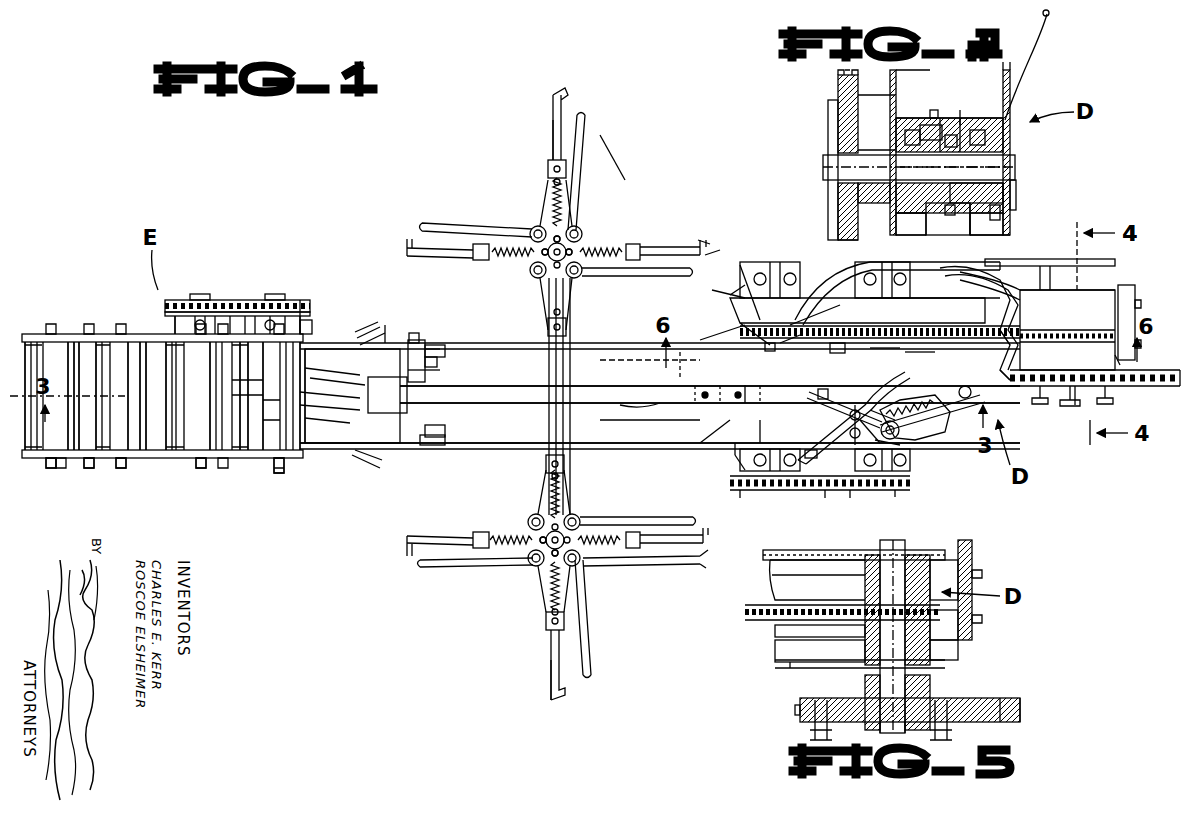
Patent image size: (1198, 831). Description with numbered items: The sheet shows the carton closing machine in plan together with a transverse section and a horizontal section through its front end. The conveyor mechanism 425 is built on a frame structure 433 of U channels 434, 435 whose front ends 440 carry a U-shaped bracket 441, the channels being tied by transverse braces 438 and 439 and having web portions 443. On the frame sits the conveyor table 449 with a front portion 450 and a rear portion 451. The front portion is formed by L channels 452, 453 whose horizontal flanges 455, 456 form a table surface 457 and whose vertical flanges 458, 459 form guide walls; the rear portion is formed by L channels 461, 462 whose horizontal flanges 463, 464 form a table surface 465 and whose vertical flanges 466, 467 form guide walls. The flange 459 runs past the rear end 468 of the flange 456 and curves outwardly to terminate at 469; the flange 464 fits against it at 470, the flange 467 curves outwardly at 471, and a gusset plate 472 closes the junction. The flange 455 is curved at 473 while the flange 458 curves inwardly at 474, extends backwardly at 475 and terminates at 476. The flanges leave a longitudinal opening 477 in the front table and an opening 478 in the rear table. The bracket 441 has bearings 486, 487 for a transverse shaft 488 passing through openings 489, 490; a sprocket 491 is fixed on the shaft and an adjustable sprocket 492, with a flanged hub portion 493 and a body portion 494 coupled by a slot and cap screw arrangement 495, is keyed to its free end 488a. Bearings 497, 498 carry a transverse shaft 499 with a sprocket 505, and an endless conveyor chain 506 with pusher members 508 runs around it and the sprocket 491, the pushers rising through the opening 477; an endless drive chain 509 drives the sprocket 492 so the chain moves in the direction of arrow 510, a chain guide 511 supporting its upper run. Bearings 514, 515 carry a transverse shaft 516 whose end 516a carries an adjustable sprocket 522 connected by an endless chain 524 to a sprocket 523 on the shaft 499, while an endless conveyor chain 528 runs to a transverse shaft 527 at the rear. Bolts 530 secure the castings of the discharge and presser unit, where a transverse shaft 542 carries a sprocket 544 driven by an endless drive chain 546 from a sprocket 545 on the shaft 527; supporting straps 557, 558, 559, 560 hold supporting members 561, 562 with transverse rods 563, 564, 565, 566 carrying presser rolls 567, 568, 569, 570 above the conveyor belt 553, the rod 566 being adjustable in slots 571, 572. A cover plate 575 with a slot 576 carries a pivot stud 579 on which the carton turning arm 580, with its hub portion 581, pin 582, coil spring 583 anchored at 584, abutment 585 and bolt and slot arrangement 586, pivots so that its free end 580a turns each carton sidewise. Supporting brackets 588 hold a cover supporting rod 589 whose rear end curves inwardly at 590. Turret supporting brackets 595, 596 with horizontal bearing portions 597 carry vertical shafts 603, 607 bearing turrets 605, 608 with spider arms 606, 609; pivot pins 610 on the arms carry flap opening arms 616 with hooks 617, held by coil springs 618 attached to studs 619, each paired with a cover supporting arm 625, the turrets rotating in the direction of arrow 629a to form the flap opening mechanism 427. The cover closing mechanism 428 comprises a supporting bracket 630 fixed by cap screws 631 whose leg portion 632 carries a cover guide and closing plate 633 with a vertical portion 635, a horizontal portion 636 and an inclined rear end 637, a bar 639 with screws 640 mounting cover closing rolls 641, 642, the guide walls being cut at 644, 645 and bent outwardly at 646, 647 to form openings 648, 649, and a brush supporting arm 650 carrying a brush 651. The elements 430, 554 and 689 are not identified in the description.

In FIG. 1, the bar 425 is at (1080, 305).
In FIG. 5, the bar 425 is at (808, 605).
In FIG. 1, the spring mechanism 427 is at (515, 300).
In FIG. 1, the frame beam 428 is at (430, 447).
In FIG. 1, the roller 430 is at (120, 460).
In FIG. 1, the housing wall 433 is at (1028, 292).
In FIG. 4, the housing wall 433 is at (1010, 128).
In FIG. 5, the housing wall 433 is at (805, 552).
In FIG. 1, the plate 434 is at (740, 330).
In FIG. 4, the plate 434 is at (1008, 233).
In FIG. 5, the plate 434 is at (825, 552).
In FIG. 4, the plate 435 is at (908, 232).
In FIG. 5, the plate 435 is at (790, 650).
In FIG. 1, the block 438 is at (840, 352).
In FIG. 4, the block 438 is at (922, 122).
In FIG. 1, the block 439 is at (828, 392).
In FIG. 1, the flange 440 is at (1128, 302).
In FIG. 4, the flange 440 is at (1014, 196).
In FIG. 5, the flange 440 is at (935, 560).
In FIG. 1, the member 441 is at (1135, 368).
In FIG. 4, the member 441 is at (1005, 218).
In FIG. 5, the member 441 is at (945, 655).
In FIG. 4, the plate 443 is at (895, 222).
In FIG. 5, the plate 443 is at (790, 664).
In FIG. 1, the lever 449 is at (720, 455).
In FIG. 1, the wall 450 is at (1003, 370).
In FIG. 4, the wall 450 is at (1003, 74).
In FIG. 1, the frame 451 is at (338, 360).
In FIG. 1, the rack 452 is at (930, 317).
In FIG. 1, the rack 453 is at (985, 364).
In FIG. 1, the housing 455 is at (1029, 311).
In FIG. 1, the housing 456 is at (1053, 362).
In FIG. 4, the bearing 457 is at (915, 130).
In FIG. 1, the rod 458 is at (875, 300).
In FIG. 4, the rod 458 is at (1012, 90).
In FIG. 1, the bolt 459 is at (960, 390).
In FIG. 4, the bolt 459 is at (843, 78).
In FIG. 1, the block 461 is at (440, 348).
In FIG. 1, the rail 462 is at (508, 447).
In FIG. 1, the rail 463 is at (496, 371).
In FIG. 1, the rail 464 is at (494, 433).
In FIG. 1, the spring mechanism 465 is at (548, 520).
In FIG. 1, the bar 466 is at (610, 380).
In FIG. 1, the bar 467 is at (632, 434).
In FIG. 1, the bar 468 is at (935, 352).
In FIG. 1, the bearing block 469 is at (800, 470).
In FIG. 1, the lever 470 is at (830, 428).
In FIG. 1, the post 471 is at (760, 430).
In FIG. 1, the post 472 is at (735, 452).
In FIG. 1, the arm 473 is at (818, 322).
In FIG. 1, the curved arm 474 is at (830, 300).
In FIG. 1, the plate 475 is at (750, 314).
In FIG. 1, the link 476 is at (725, 345).
In FIG. 1, the rack 477 is at (880, 330).
In FIG. 4, the rack 477 is at (962, 120).
In FIG. 1, the post 478 is at (748, 388).
In FIG. 4, the plate 486 is at (978, 203).
In FIG. 5, the plate 486 is at (790, 578).
In FIG. 4, the hub 487 is at (940, 205).
In FIG. 5, the hub 487 is at (780, 632).
In FIG. 1, the shaft 488 is at (1070, 405).
In FIG. 4, the shaft 488 is at (826, 162).
In FIG. 5, the shaft 488 is at (893, 545).
In FIG. 1, the shaft portion 488a is at (1062, 405).
In FIG. 4, the shaft portion 488a is at (826, 172).
In FIG. 5, the shaft portion 488a is at (935, 730).
In FIG. 4, the hub 489 is at (1012, 186).
In FIG. 5, the hub 489 is at (870, 555).
In FIG. 4, the hub 490 is at (840, 194).
In FIG. 5, the hub 490 is at (932, 692).
In FIG. 1, the shaft axis 491 is at (1034, 326).
In FIG. 4, the shaft axis 491 is at (940, 178).
In FIG. 5, the shaft axis 491 is at (940, 640).
In FIG. 1, the base plate 492 is at (1098, 388).
In FIG. 4, the base plate 492 is at (845, 240).
In FIG. 5, the base plate 492 is at (1012, 711).
In FIG. 1, the plate 493 is at (1078, 398).
In FIG. 4, the plate 493 is at (830, 126).
In FIG. 5, the plate 493 is at (878, 722).
In FIG. 4, the flange 494 is at (830, 110).
In FIG. 5, the flange 494 is at (800, 710).
In FIG. 1, the bolt 495 is at (1112, 405).
In FIG. 5, the bolt 495 is at (815, 737).
In FIG. 1, the link 497 is at (760, 320).
In FIG. 1, the post 498 is at (745, 462).
In FIG. 1, the bearing block 499 is at (795, 265).
In FIG. 1, the link 505 is at (745, 300).
In FIG. 1, the rack 506 is at (790, 340).
In FIG. 1, the screw 508 is at (768, 348).
In FIG. 4, the screw 508 is at (935, 112).
In FIG. 1, the plate end 509 is at (1180, 390).
In FIG. 1, the bar 510 is at (870, 350).
In FIG. 4, the key 511 is at (950, 138).
In FIG. 1, the bearing block 514 is at (796, 278).
In FIG. 1, the bearing block 515 is at (912, 462).
In FIG. 1, the bolt 516 is at (900, 494).
In FIG. 1, the bolt 516a is at (850, 492).
In FIG. 1, the rack 522 is at (912, 481).
In FIG. 1, the bolt 523 is at (760, 490).
In FIG. 1, the bolt 524 is at (826, 490).
In FIG. 1, the bracket 527 is at (275, 294).
In FIG. 1, the hole 528 is at (700, 386).
In FIG. 1, the plate 530 is at (300, 330).
In FIG. 1, the bracket 542 is at (200, 294).
In FIG. 1, the post 544 is at (180, 322).
In FIG. 1, the block 545 is at (312, 322).
In FIG. 1, the rack 546 is at (240, 300).
In FIG. 1, the roller 553 is at (88, 358).
In FIG. 1, the roller 554 is at (156, 460).
In FIG. 1, the post 557 is at (300, 300).
In FIG. 1, the roller 558 is at (100, 334).
In FIG. 1, the roller 559 is at (265, 462).
In FIG. 1, the bolt 560 is at (76, 466).
In FIG. 1, the roller 561 is at (68, 334).
In FIG. 1, the roller 562 is at (140, 462).
In FIG. 1, the roller 563 is at (293, 456).
In FIG. 1, the bolt 564 is at (200, 468).
In FIG. 1, the bolt 565 is at (128, 470).
In FIG. 1, the bolt 566 is at (52, 466).
In FIG. 1, the roller 567 is at (290, 424).
In FIG. 1, the roller 568 is at (240, 436).
In FIG. 1, the roller 569 is at (135, 382).
In FIG. 1, the roller 570 is at (74, 366).
In FIG. 1, the roller 571 is at (40, 334).
In FIG. 1, the bolt 572 is at (40, 464).
In FIG. 1, the cam 575 is at (895, 418).
In FIG. 1, the spring 576 is at (928, 396).
In FIG. 1, the link 579 is at (925, 427).
In FIG. 1, the link 580 is at (905, 442).
In FIG. 1, the link 580a is at (805, 423).
In FIG. 1, the link 581 is at (915, 438).
In FIG. 1, the pivot 582 is at (930, 422).
In FIG. 1, the rod 583 is at (968, 404).
In FIG. 1, the rod 584 is at (970, 396).
In FIG. 1, the post 585 is at (860, 400).
In FIG. 1, the block 586 is at (815, 455).
In FIG. 1, the rod 588 is at (972, 280).
In FIG. 4, the rod 588 is at (1040, 40).
In FIG. 1, the plate 589 is at (1012, 260).
In FIG. 4, the plate 589 is at (1050, 13).
In FIG. 1, the hook 590 is at (707, 250).
In FIG. 1, the pin 595 is at (580, 468).
In FIG. 1, the pin 596 is at (572, 326).
In FIG. 1, the block 597 is at (575, 306).
In FIG. 1, the spring 603 is at (545, 585).
In FIG. 1, the spring 605 is at (545, 598).
In FIG. 1, the spring 606 is at (527, 530).
In FIG. 1, the spring 607 is at (548, 235).
In FIG. 1, the spring 608 is at (545, 188).
In FIG. 1, the spring 609 is at (545, 210).
In FIG. 1, the block 610 is at (548, 165).
In FIG. 1, the rod 616 is at (553, 120).
In FIG. 1, the hook 617 is at (560, 95).
In FIG. 1, the pin 618 is at (548, 182).
In FIG. 1, the pin 619 is at (575, 215).
In FIG. 1, the rod 625 is at (555, 395).
In FIG. 1, the rod 629a is at (628, 185).
In FIG. 1, the block 630 is at (420, 345).
In FIG. 1, the screw 631 is at (414, 333).
In FIG. 1, the post 632 is at (385, 330).
In FIG. 1, the block 633 is at (400, 380).
In FIG. 1, the bar 635 is at (440, 370).
In FIG. 1, the leaf 636 is at (318, 392).
In FIG. 1, the leaf 637 is at (312, 370).
In FIG. 1, the bar 639 is at (450, 393).
In FIG. 1, the block 640 is at (445, 348).
In FIG. 1, the block 641 is at (440, 355).
In FIG. 1, the block 642 is at (445, 428).
In FIG. 1, the strip 644 is at (372, 340).
In FIG. 1, the strip 645 is at (378, 455).
In FIG. 1, the strip 646 is at (342, 330).
In FIG. 1, the bolt 647 is at (292, 470).
In FIG. 1, the strip 648 is at (352, 334).
In FIG. 1, the strip 649 is at (368, 464).
In FIG. 1, the link 650 is at (640, 405).
In FIG. 1, the line 651 is at (680, 368).
In FIG. 1, the rod 689 is at (612, 645).